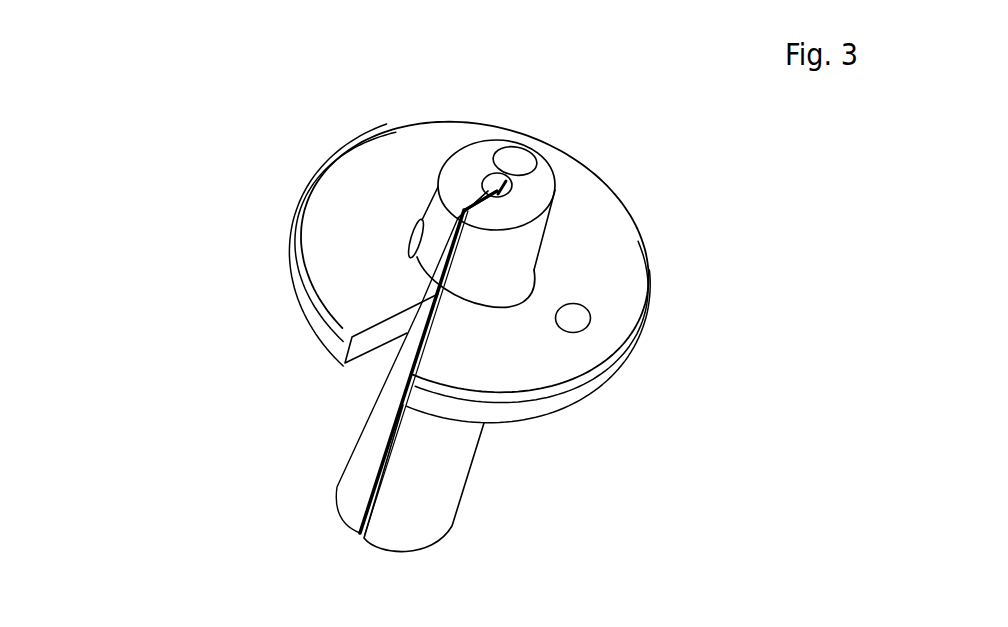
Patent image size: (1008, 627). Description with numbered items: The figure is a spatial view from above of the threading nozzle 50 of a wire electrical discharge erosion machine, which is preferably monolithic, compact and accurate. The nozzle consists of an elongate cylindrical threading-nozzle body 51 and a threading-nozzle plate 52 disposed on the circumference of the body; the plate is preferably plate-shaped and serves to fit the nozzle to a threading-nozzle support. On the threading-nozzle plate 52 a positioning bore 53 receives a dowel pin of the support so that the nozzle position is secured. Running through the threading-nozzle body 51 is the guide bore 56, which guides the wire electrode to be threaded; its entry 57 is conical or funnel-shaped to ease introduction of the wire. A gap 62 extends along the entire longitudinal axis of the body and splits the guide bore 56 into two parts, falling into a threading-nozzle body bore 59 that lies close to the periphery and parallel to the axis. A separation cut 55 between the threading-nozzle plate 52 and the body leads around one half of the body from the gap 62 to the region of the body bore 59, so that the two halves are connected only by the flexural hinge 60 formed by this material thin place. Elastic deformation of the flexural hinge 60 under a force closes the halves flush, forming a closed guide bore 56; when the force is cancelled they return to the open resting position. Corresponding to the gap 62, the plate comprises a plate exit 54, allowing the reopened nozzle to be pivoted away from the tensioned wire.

The threading nozzle 50 is at (639, 467).
The threading-nozzle body 51 is at (362, 443).
The threading-nozzle plate 52 is at (583, 273).
The positioning bore 53 is at (590, 315).
The plate exit 54 is at (378, 335).
The separation cut 55 is at (413, 232).
The guide bore 56 is at (487, 185).
The entry of the guide bore 57 is at (487, 185).
The threading-nozzle body bore 59 is at (543, 148).
The flexural hinge 60 is at (520, 165).
The gap 62 is at (447, 273).